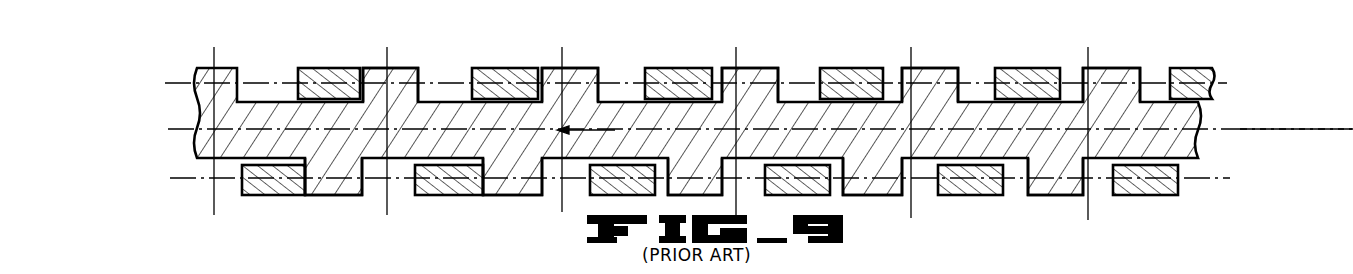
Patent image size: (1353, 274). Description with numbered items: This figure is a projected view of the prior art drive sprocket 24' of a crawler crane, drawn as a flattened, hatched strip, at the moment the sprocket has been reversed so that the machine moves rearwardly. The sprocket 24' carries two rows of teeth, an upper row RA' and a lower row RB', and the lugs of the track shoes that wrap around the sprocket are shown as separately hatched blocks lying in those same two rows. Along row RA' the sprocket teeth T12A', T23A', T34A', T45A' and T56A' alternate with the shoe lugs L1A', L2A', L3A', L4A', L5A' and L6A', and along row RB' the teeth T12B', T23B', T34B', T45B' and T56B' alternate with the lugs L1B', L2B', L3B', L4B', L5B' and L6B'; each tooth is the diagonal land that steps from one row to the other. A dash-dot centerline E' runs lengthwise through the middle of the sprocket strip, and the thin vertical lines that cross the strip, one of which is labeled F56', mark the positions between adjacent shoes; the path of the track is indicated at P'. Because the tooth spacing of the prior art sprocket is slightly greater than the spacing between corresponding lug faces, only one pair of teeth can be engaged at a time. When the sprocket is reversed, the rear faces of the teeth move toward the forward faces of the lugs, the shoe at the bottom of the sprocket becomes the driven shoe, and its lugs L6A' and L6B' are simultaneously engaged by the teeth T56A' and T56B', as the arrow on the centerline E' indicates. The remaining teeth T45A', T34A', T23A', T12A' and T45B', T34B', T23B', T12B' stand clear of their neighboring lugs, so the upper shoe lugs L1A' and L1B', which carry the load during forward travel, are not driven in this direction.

The sprocket 24' is at (749, 131).
The core axis E' is at (736, 115).
The row of teeth and lugs RA' is at (669, 69).
The row of teeth and lugs RB' is at (672, 164).
The path of the track P' is at (1296, 104).
The plane F56 F56' is at (405, 156).
The lug L6A' is at (312, 68).
The lug L5A' is at (500, 70).
The lug L4A' is at (678, 70).
The lug L3A' is at (851, 71).
The lug L2A' is at (1027, 71).
The lug L1A' is at (1195, 70).
The lug L6B' is at (269, 197).
The lug L5B' is at (446, 195).
The lug L4B' is at (622, 164).
The lug L3B' is at (797, 162).
The lug L2B' is at (970, 195).
The lug L1B' is at (1145, 199).
The sprocket tooth T56A' is at (407, 63).
The sprocket tooth T45A' is at (587, 63).
The sprocket tooth T34A' is at (764, 64).
The sprocket tooth T23A' is at (940, 64).
The sprocket tooth T12A' is at (1118, 63).
The sprocket tooth T56B' is at (322, 204).
The sprocket tooth T45B' is at (506, 200).
The sprocket tooth T34B' is at (698, 156).
The sprocket tooth T23B' is at (884, 204).
The sprocket tooth T12B' is at (1057, 204).